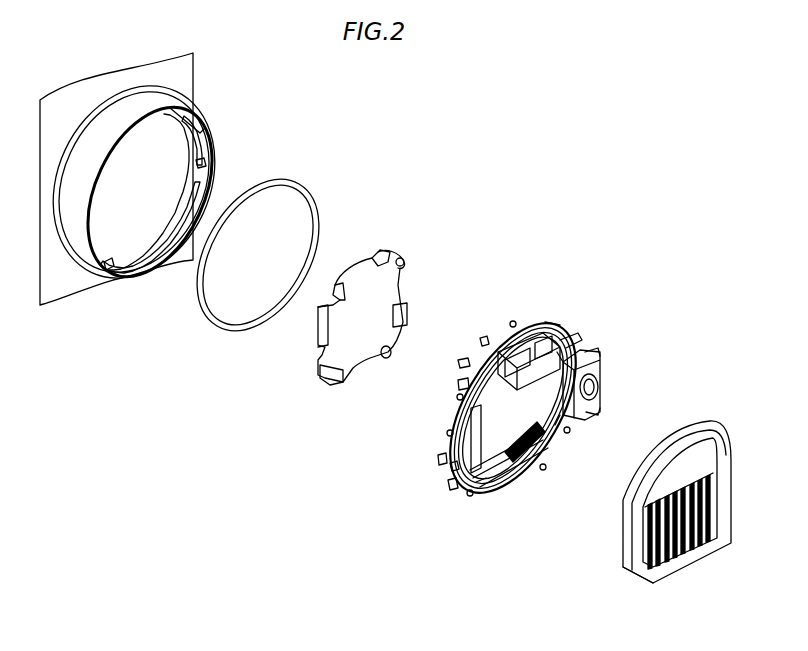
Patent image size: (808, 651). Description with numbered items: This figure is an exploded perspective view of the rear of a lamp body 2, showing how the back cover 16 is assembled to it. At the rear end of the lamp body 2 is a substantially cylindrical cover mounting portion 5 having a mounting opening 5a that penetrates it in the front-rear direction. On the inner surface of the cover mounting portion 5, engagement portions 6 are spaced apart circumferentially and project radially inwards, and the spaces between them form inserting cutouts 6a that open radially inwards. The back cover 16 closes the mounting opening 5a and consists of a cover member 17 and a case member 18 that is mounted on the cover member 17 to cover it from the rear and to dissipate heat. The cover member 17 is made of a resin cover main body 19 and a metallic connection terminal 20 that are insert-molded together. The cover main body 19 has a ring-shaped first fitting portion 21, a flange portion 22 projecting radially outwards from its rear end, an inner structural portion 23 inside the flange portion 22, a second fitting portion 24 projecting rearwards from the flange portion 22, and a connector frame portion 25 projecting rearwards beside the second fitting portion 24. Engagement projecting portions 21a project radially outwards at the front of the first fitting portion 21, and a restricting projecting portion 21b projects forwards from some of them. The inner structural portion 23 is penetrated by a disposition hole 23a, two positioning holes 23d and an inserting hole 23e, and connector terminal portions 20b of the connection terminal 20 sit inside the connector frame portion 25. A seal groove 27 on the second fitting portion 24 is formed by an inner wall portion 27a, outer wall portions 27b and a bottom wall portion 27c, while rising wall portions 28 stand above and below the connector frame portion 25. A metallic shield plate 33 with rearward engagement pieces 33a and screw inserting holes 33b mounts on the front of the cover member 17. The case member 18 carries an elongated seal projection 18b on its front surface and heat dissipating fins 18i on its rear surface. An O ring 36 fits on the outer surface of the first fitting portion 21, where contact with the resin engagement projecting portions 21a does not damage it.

The lamp body 2 is at (190, 72).
The cover mounting portion 5 is at (170, 103).
The mounting opening 5a is at (200, 133).
The engagement portion 6 is at (193, 150).
The inserting cutout 6a is at (197, 165).
The O ring 36 is at (287, 177).
The back cover 16 is at (590, 198).
The shield plate 33 is at (387, 250).
The engagement piece 33a is at (377, 247).
The screw inserting hole 33b is at (407, 263).
The cover member 17 is at (537, 322).
The case member 18 is at (668, 396).
The elongated seal projection 18b is at (624, 535).
The heat dissipating fin 18i is at (710, 490).
The cover main body 19 is at (557, 323).
The connection terminal 20 is at (515, 420).
The connector terminal portion 20b is at (590, 356).
The first fitting portion 21 is at (500, 330).
The engagement projecting portion 21a is at (483, 342).
The restricting projecting portion 21b is at (440, 460).
The flange portion 22 is at (450, 487).
The inner structural portion 23 is at (490, 487).
The disposition hole 23a is at (462, 413).
The positioning hole 23d is at (563, 447).
The inserting hole 23e is at (577, 340).
The second fitting portion 24 is at (462, 385).
The connector frame portion 25 is at (597, 397).
The seal groove 27 is at (470, 350).
The inner wall portion 27a is at (463, 363).
The outer wall portion 27b is at (513, 323).
The bottom wall portion 27c is at (480, 490).
The rising wall portion 28 is at (590, 357).